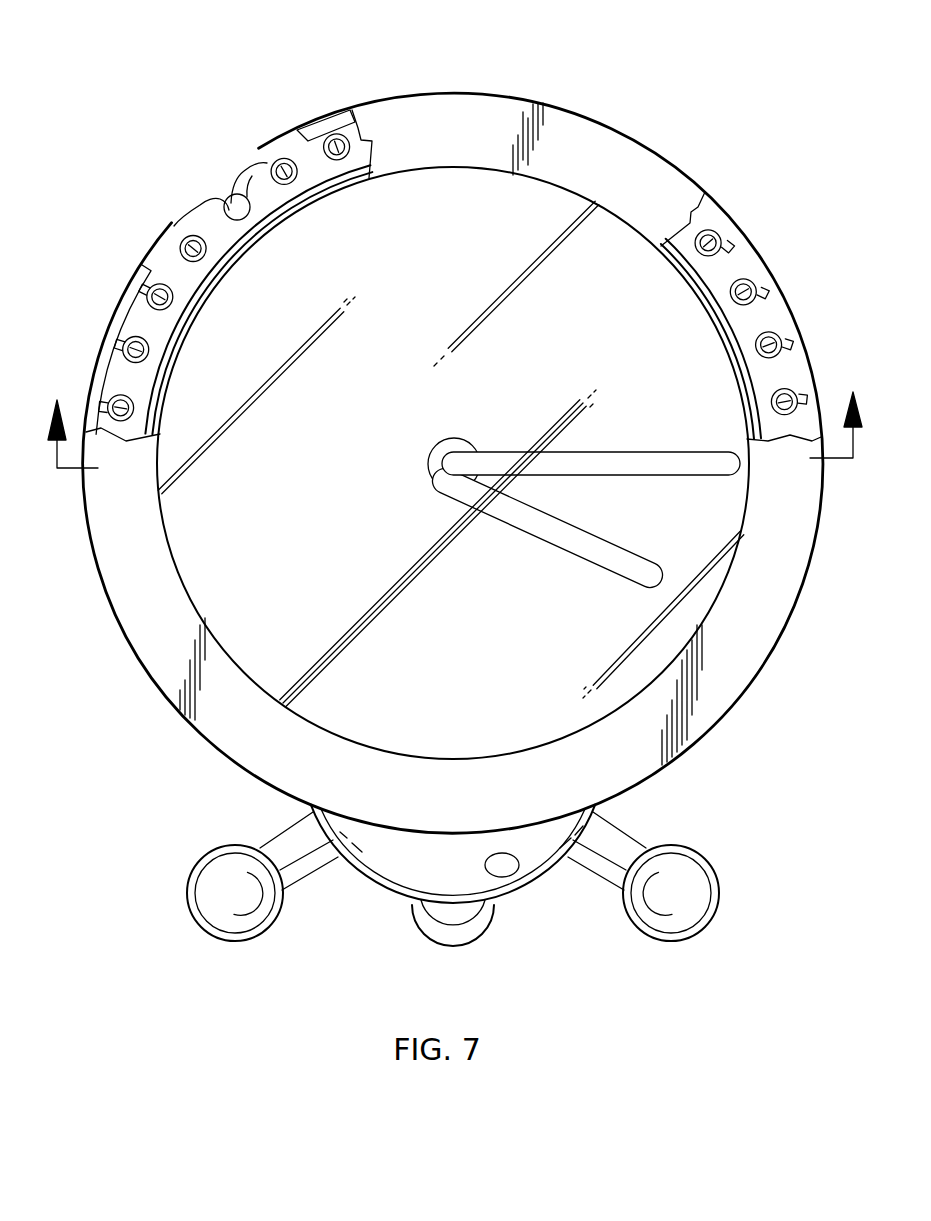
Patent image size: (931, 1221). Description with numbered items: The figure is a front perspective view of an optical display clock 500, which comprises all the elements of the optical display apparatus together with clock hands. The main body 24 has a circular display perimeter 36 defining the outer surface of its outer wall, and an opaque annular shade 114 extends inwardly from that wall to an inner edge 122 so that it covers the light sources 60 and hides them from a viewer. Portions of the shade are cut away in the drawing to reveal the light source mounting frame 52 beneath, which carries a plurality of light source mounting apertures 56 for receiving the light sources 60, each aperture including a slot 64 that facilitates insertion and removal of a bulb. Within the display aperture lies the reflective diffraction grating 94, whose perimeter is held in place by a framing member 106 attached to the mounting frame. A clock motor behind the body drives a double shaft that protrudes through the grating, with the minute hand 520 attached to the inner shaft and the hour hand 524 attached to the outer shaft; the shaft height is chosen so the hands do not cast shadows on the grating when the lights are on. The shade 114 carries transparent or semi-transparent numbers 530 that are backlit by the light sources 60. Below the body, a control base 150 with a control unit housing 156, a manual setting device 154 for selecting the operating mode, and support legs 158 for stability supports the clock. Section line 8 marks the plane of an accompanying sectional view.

The optical display clock 500 is at (455, 493).
The main body 24 is at (460, 467).
The inner edge 122 is at (558, 192).
The framing member 106 is at (172, 347).
The display perimeter 36 is at (118, 317).
The light sources 60 is at (283, 158).
The reflective diffraction grating 94 is at (680, 331).
The light source mounting frame 52 is at (200, 177).
The light source mounting apertures 56 is at (241, 188).
The slot 64 is at (231, 200).
The minute hand 520 is at (630, 450).
The hour hand 524 is at (602, 567).
The annular shade 114 is at (772, 608).
The numbers 530 is at (750, 652).
The control base 150 is at (478, 879).
The control unit housing 156 is at (372, 888).
The manual setting device 154 is at (498, 872).
The support legs 158 is at (212, 853).
The section line 8- 8 is at (455, 416).